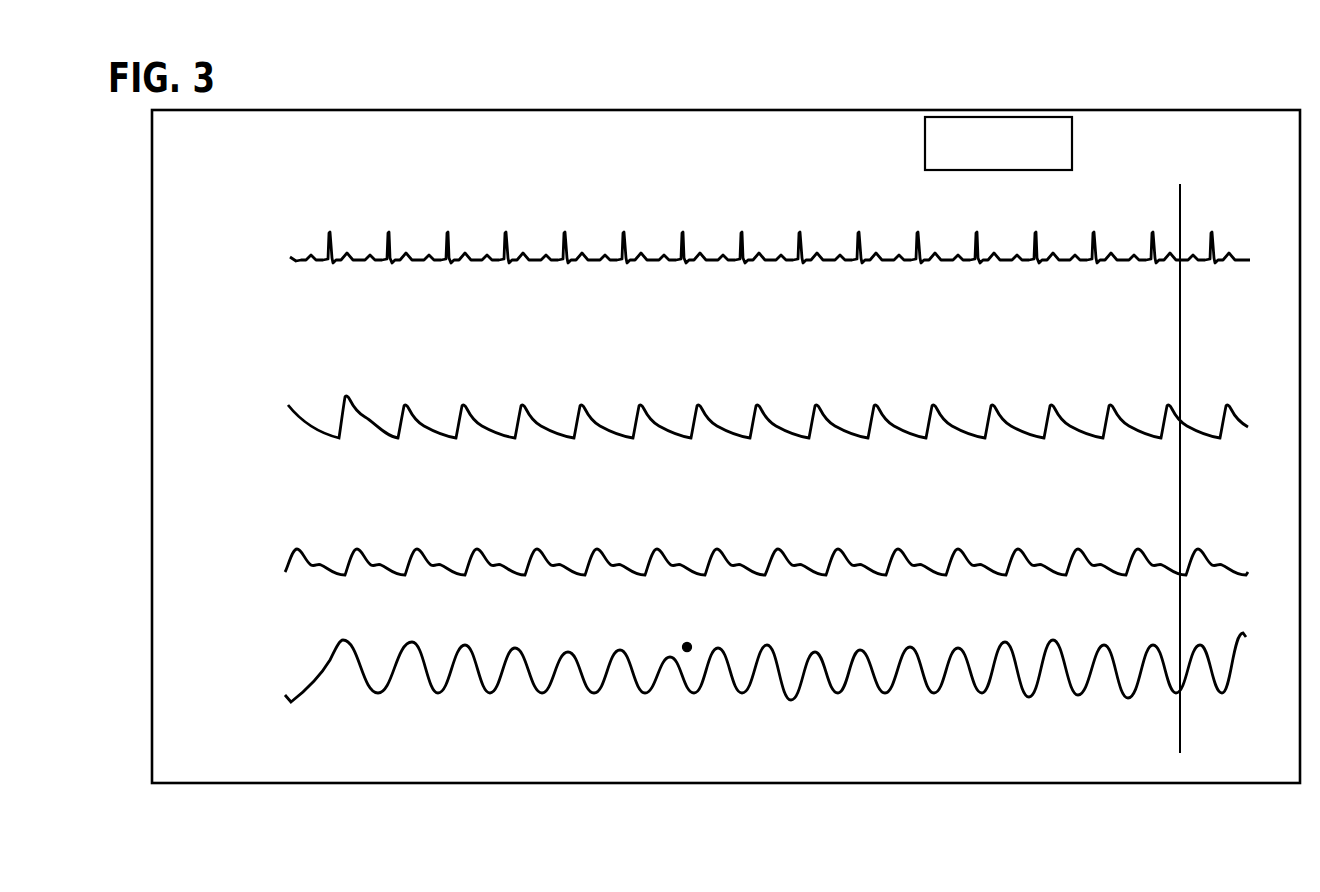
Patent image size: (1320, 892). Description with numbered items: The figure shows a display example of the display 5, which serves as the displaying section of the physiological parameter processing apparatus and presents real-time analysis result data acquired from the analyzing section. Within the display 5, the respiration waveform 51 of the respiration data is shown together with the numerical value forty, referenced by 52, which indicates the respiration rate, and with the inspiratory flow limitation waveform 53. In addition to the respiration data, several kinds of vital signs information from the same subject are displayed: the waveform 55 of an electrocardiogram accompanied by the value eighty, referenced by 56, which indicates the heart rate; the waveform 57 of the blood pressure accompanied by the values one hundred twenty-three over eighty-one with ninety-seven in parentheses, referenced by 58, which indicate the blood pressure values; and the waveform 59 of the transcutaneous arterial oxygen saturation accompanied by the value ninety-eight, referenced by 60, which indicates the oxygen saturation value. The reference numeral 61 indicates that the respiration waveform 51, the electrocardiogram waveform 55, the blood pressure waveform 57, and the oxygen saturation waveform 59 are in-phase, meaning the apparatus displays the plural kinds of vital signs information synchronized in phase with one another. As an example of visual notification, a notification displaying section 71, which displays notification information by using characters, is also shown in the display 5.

The display 5 is at (477, 109).
The notification displaying section 71 is at (1072, 131).
The electrocardiogram waveform 55 is at (412, 257).
The heart rate value 56 is at (190, 261).
The blood pressure waveform 57 is at (407, 404).
The blood pressure values 58 is at (186, 415).
The transcutaneous arterial oxygen saturation waveform 59 is at (418, 550).
The transcutaneous arterial oxygen saturation value 60 is at (190, 565).
The respiration waveform 51 is at (418, 646).
The respiration rate value 52 is at (190, 681).
The inspiratory flow limitation waveform 53 is at (690, 652).
The in-phase indicator 61 is at (1179, 730).